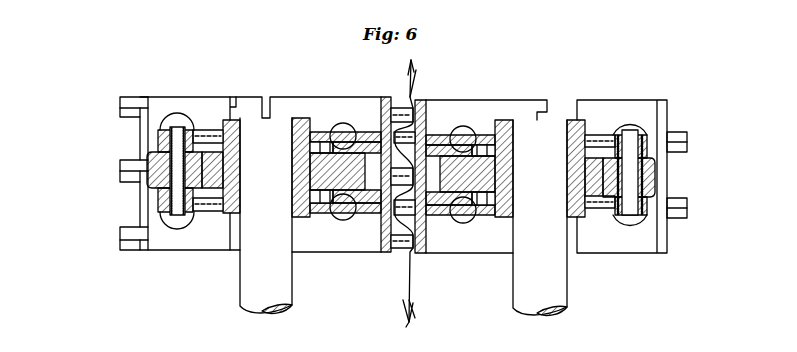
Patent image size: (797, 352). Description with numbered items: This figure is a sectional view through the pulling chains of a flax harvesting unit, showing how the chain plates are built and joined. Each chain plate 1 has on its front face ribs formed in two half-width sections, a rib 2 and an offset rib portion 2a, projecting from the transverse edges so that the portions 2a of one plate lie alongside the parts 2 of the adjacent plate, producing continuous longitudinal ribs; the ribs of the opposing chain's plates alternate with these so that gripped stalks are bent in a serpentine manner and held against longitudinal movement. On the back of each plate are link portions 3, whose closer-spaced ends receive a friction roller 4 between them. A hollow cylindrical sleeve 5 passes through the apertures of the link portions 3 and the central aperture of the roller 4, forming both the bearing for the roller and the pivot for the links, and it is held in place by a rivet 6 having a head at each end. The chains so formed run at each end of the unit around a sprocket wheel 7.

The chain plate 1 is at (193, 103).
The rib 2 is at (122, 102).
The rib portion 2a is at (123, 112).
The link portion 3 is at (205, 140).
The friction roller 4 is at (152, 188).
The hollow cylindrical sleeve 5 is at (178, 203).
The rivet 6 is at (178, 205).
The sprocket wheel 7 is at (308, 128).